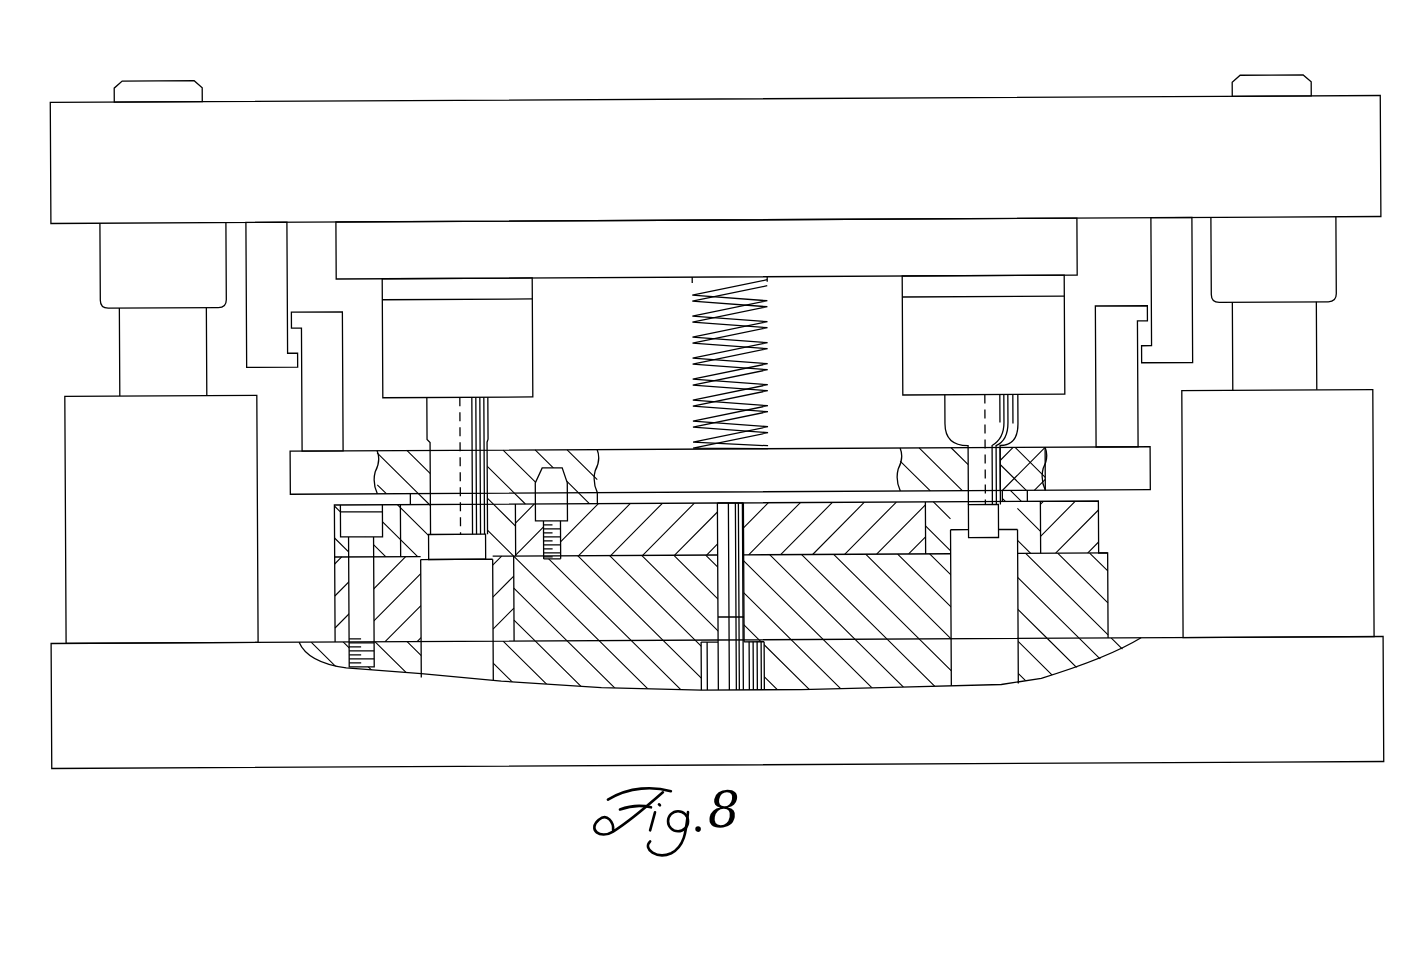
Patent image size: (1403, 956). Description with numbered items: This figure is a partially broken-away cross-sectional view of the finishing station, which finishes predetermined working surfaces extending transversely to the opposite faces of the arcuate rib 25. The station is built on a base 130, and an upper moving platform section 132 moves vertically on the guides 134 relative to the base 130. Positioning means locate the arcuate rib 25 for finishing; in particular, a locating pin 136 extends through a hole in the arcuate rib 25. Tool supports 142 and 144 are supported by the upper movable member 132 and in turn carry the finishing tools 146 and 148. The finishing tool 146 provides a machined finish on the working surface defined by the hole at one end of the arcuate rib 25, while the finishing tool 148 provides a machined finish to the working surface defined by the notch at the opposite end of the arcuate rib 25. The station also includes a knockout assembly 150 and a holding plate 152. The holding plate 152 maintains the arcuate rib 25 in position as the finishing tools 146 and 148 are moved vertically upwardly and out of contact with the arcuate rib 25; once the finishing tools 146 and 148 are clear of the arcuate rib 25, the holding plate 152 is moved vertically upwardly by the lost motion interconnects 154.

The arcuate rib 25 is at (1017, 497).
The base 130 is at (1197, 733).
The upper moving platform section 132 is at (1015, 124).
The guides 134 is at (148, 350).
The locating pin 136 is at (555, 472).
The tool support 142 is at (515, 335).
The tool support 144 is at (918, 318).
The finishing tool 146 is at (450, 534).
The finishing tool 148 is at (985, 539).
The knockout assembly 150 is at (733, 590).
The holding plate 152 is at (803, 461).
The lost motion interconnects 154 is at (317, 330).